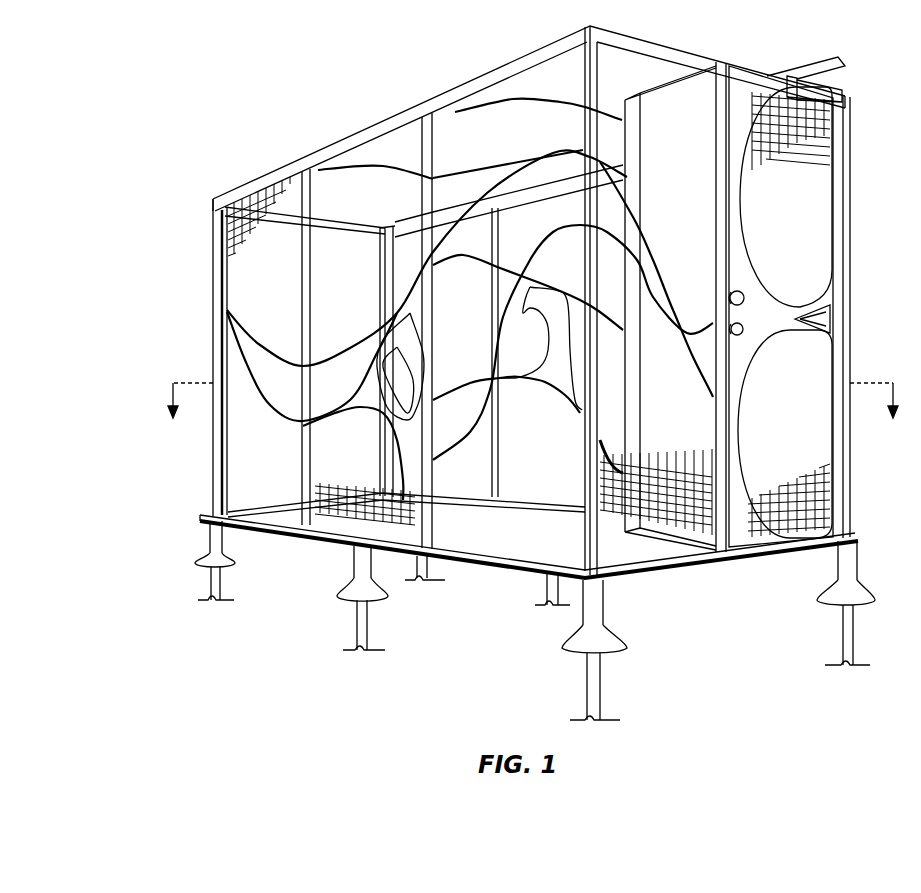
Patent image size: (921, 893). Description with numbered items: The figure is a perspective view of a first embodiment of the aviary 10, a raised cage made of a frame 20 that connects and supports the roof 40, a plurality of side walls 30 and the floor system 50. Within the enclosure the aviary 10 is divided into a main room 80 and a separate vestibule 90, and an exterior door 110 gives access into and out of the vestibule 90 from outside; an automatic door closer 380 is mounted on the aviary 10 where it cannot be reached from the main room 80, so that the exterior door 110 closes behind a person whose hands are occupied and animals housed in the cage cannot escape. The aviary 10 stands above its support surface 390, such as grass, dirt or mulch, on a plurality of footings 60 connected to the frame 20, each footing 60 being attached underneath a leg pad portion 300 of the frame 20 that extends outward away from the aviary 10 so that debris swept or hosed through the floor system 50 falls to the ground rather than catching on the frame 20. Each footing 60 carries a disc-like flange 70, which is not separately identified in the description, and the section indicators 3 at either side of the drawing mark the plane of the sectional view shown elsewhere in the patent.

The aviary 10 is at (407, 101).
The frame 20 is at (215, 290).
The side walls 30 is at (222, 230).
The roof 40 is at (513, 112).
The floor system 50 is at (529, 544).
The footings 60 is at (598, 692).
The foot 70 is at (205, 556).
The main room 80 is at (323, 238).
The vestibule 90 is at (683, 115).
The exterior door 110 is at (745, 545).
The leg pad portion 300 is at (857, 540).
The automatic door closer 380 is at (843, 90).
The support surface 390 is at (731, 661).
The section line 3 is at (533, 415).